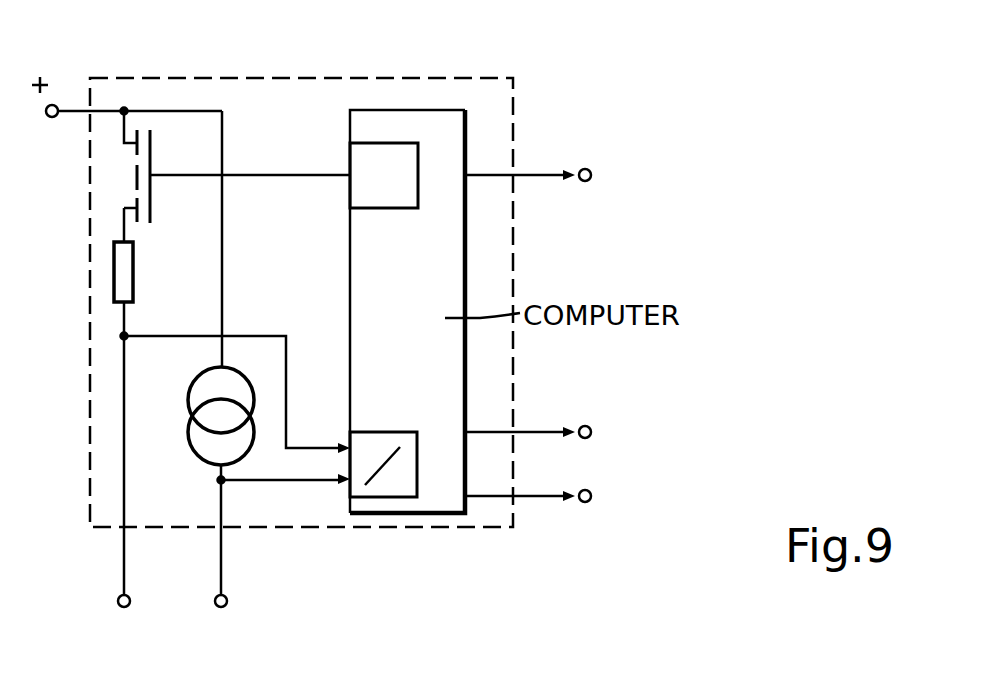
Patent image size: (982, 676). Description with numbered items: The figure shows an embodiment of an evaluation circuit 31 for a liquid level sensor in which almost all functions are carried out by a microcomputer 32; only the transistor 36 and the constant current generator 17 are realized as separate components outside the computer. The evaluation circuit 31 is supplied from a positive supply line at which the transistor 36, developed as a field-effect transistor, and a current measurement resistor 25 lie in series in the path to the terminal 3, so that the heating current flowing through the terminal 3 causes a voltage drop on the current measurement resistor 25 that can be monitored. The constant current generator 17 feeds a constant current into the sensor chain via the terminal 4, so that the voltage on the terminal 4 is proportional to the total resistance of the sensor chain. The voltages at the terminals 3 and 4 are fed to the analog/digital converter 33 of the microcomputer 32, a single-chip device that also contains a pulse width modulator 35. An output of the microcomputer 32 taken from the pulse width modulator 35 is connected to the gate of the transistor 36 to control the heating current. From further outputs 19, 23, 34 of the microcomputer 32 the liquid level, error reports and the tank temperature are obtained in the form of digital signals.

The evaluation circuit 31 is at (505, 89).
The microcomputer 32 is at (355, 278).
The analog/digital converter 33 is at (390, 437).
The output 34 is at (575, 183).
The pulse width modulator 35 is at (360, 158).
The transistor 36 is at (167, 176).
The current measurement resistor 25 is at (145, 270).
The constant current generator 17 is at (232, 406).
The output 23 is at (578, 434).
The output 19 is at (578, 503).
The terminal 3 is at (130, 620).
The terminal 4 is at (228, 620).